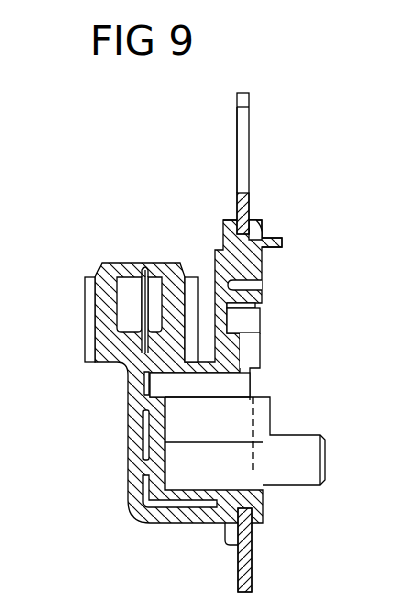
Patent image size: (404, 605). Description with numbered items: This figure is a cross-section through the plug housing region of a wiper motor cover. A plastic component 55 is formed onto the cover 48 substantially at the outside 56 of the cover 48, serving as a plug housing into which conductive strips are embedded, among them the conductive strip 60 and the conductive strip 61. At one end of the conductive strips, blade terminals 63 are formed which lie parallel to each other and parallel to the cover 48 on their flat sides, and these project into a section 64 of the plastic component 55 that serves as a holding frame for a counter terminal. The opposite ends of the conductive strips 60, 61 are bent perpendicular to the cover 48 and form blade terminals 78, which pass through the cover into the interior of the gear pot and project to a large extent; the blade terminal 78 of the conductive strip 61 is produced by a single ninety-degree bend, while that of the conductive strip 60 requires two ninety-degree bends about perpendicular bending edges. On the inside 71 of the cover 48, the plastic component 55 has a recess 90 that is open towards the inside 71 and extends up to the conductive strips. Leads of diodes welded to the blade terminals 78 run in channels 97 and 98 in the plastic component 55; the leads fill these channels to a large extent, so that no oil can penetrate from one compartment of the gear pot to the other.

The cover 48 is at (243, 113).
The outside 56 is at (237, 131).
The inside 71 is at (250, 197).
The blade terminal 63 is at (141, 287).
The section 64 is at (103, 315).
The channel 97 is at (250, 288).
The channel 98 is at (249, 320).
The plastic component 55 is at (106, 393).
The recess 90 is at (240, 385).
The conductive strip 61 is at (130, 433).
The conductive strip 60 is at (150, 497).
The blade terminal 78 is at (297, 476).